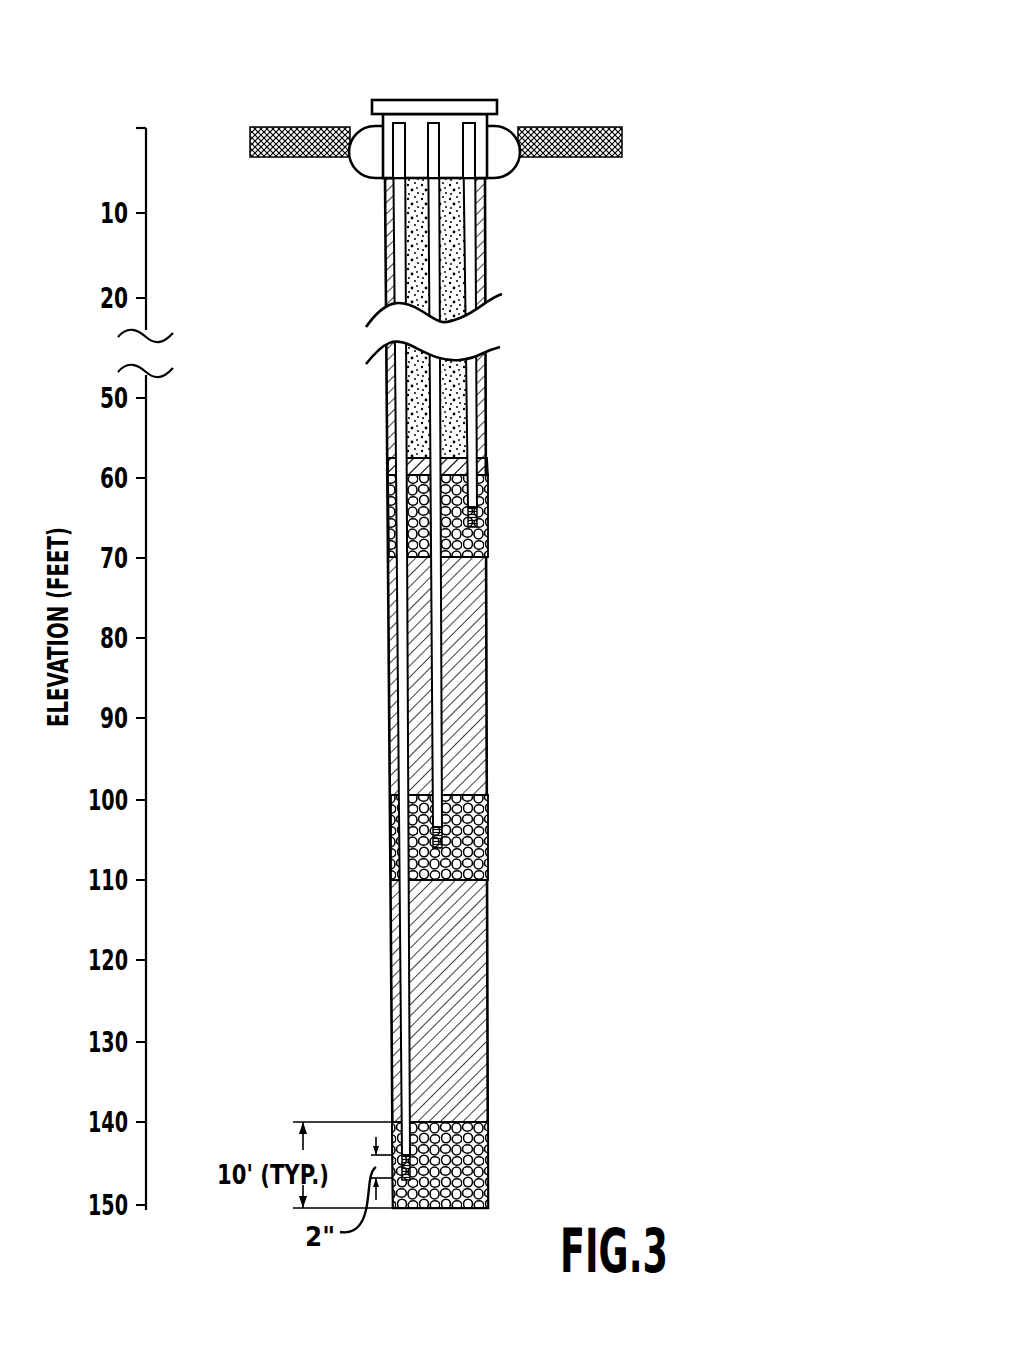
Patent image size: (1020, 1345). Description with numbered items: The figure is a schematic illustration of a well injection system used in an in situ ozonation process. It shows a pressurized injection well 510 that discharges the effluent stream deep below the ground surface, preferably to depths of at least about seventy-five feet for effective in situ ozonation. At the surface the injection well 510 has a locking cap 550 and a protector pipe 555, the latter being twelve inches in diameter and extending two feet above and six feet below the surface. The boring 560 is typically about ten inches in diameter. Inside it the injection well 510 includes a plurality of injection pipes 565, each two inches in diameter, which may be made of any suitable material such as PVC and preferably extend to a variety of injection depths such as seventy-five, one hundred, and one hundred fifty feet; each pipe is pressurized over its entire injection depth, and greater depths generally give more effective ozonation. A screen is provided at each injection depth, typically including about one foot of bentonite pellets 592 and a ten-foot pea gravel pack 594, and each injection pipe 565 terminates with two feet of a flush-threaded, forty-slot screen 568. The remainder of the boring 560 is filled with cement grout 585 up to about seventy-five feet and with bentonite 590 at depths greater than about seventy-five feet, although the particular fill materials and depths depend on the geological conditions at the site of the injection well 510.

The pressurized injection well 510 is at (240, 97).
The locking cap 550 is at (494, 101).
The protector pipe 555 is at (489, 120).
The boring 560 is at (485, 197).
The injection pipes 565 is at (485, 252).
The cement grout 585 is at (485, 300).
The bentonite pellets 592 is at (488, 465).
The flush-threaded, 40-slot screen 568 is at (478, 505).
The pea gravel pack 594 is at (490, 536).
The bentonite 590 is at (488, 987).